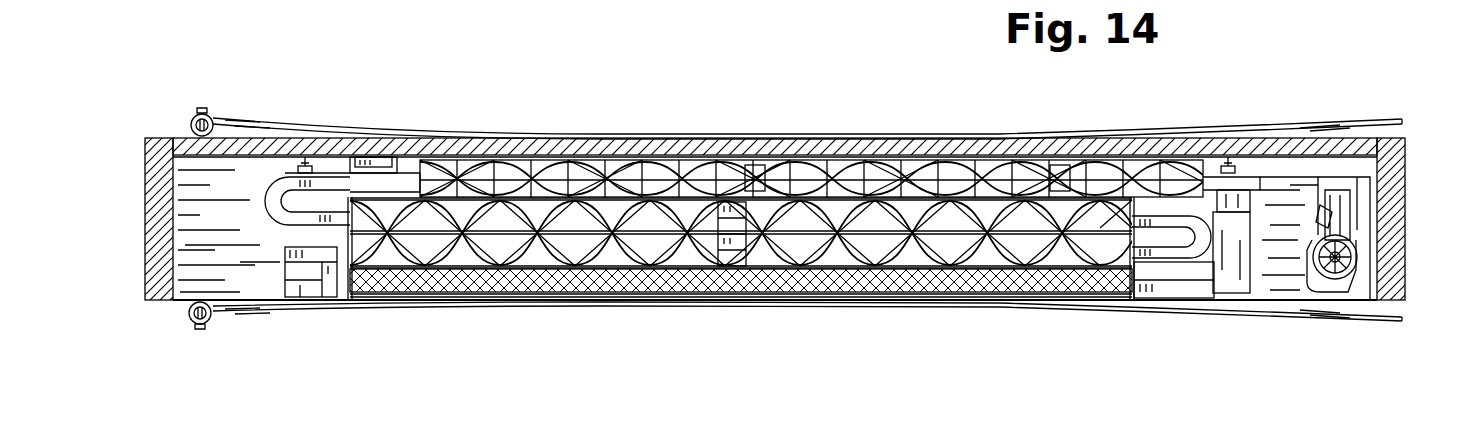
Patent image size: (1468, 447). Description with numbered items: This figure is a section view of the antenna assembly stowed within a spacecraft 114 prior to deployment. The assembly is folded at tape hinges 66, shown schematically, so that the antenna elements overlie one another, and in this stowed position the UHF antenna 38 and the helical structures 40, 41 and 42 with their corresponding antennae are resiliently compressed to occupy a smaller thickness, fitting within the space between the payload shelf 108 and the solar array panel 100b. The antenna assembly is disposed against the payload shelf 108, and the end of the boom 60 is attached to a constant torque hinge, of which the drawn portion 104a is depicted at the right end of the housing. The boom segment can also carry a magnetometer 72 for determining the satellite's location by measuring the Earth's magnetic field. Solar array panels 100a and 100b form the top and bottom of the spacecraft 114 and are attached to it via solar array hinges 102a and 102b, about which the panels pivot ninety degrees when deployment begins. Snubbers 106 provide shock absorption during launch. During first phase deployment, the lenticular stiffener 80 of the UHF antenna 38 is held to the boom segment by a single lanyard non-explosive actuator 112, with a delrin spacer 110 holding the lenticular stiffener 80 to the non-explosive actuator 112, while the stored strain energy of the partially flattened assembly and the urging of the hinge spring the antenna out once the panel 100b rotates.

The spacecraft 114 is at (165, 130).
The solar array hinge 102a is at (213, 114).
The solar array hinge 102b is at (190, 325).
The snubber 106 is at (307, 148).
The magnetometer 72 is at (388, 160).
The helical structure 42 is at (516, 165).
The payload shelf 108 is at (605, 144).
The helical structure 41 is at (917, 215).
The helical structure 40 is at (518, 255).
The UHF antenna 38 is at (627, 296).
The tape hinge 66 is at (262, 198).
The lenticular stiffener 80 is at (331, 298).
The single lanyard non-explosive actuator 112 is at (1244, 205).
The delrin spacer 110 is at (1244, 276).
The boom 60 is at (1298, 184).
The solar array panel 100a is at (1362, 119).
The solar array panel 100b is at (1352, 318).
The drive fan 104a is at (1365, 220).